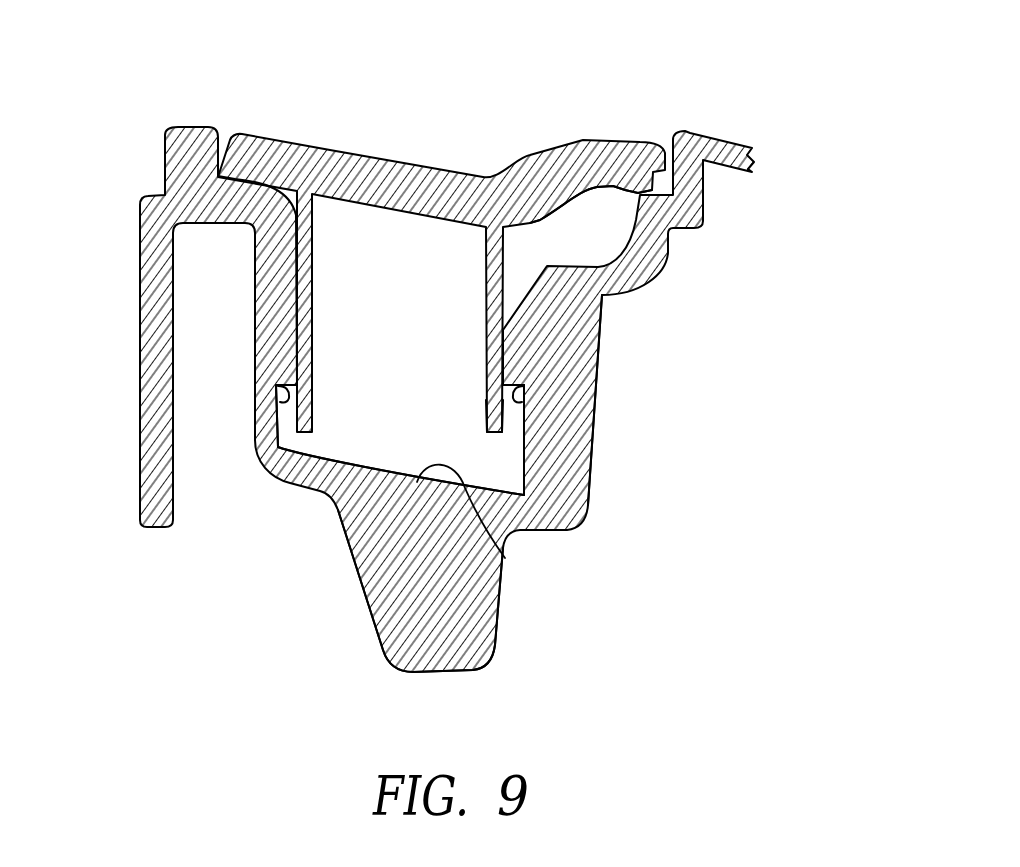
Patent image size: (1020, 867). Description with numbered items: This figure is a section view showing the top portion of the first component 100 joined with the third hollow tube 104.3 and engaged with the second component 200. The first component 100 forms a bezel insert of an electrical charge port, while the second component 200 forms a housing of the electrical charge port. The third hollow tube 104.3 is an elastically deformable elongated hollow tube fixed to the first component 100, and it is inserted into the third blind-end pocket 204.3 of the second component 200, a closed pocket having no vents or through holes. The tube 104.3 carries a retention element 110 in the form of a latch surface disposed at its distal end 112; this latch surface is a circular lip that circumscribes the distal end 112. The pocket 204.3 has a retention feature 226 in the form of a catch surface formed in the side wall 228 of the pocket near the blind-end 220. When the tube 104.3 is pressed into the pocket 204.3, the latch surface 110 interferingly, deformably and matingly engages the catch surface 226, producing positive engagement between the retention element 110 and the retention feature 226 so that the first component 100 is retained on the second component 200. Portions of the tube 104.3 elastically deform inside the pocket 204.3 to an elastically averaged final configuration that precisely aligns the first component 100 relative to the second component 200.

The first component 100 is at (578, 125).
The second component 200 is at (739, 132).
The third hollow tube 104.3 is at (520, 247).
The side wall 228 is at (600, 317).
The retention feature 226 is at (600, 363).
The retention element 110 is at (506, 417).
The distal end 112 is at (520, 432).
The third blind-end pocket 204.3 is at (490, 462).
The blind-end 220 is at (508, 548).